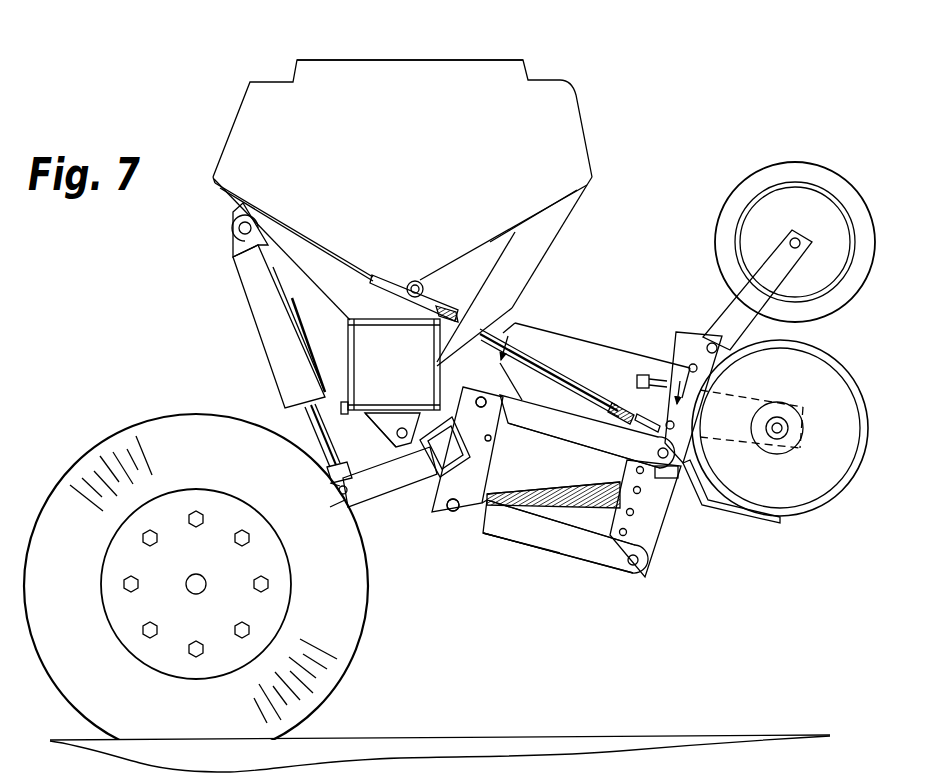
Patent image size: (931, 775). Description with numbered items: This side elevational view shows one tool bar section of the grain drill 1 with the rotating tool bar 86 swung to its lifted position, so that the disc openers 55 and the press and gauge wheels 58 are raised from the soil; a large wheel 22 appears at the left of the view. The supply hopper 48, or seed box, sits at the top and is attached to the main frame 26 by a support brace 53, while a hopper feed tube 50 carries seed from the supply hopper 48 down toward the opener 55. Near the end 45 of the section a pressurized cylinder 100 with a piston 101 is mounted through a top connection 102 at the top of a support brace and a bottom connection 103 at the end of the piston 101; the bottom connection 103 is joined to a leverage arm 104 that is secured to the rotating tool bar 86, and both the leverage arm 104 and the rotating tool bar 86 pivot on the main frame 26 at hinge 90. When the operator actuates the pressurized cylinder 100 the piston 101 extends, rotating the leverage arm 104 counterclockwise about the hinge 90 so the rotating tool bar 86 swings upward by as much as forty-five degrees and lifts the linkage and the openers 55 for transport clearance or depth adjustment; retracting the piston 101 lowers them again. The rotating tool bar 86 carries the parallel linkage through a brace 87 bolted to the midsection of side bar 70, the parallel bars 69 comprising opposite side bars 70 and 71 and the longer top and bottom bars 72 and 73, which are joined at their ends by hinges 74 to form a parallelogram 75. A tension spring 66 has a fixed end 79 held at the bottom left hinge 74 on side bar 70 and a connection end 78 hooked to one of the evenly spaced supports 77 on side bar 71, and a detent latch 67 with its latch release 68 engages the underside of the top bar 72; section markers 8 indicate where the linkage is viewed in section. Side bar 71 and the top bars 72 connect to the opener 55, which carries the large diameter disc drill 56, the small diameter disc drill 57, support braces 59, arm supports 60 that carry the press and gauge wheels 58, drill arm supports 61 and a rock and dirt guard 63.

The grain drill 1 is at (628, 78).
The section line 8- 8 is at (583, 389).
The gauge wheel 22 is at (178, 408).
The main frame 26 is at (422, 312).
The end 45 is at (584, 144).
The supply hopper 48 is at (476, 58).
The hopper feed tube 50 is at (633, 410).
The support brace 53 is at (562, 218).
The disc opener 55 is at (700, 334).
The large diameter disc drill 56 is at (790, 352).
The small diameter disc drill 57 is at (838, 368).
The press and gauge wheel 58 is at (789, 162).
The support brace 59 is at (681, 362).
The arm support 60 is at (740, 306).
The drill arm support 61 is at (750, 395).
The rock and dirt guard 63 is at (768, 523).
The tension spring 66 is at (570, 495).
The detent latch 67 is at (508, 425).
The latch release 68 is at (518, 398).
The parallel bars 69 is at (563, 550).
The side opposite facing bar 70 is at (487, 497).
The side opposite facing bar 71 is at (632, 513).
The top opposite facing bar 72 is at (557, 398).
The bottom opposite facing bar 73 is at (520, 533).
The hinge 74 is at (481, 396).
The parallelogram 75 is at (607, 567).
The evenly spaced support 77 is at (380, 428).
The connection end 78 is at (652, 470).
The fixed end 79 is at (485, 505).
The rotating tool bar 86 is at (467, 449).
The brace 87 is at (440, 465).
The hinge 90 is at (390, 438).
The pressurized cylinder 100 is at (240, 283).
The piston 101 is at (307, 417).
The top connection 102 is at (233, 222).
The bottom connection 103 is at (338, 496).
The leverage arm 104 is at (363, 507).